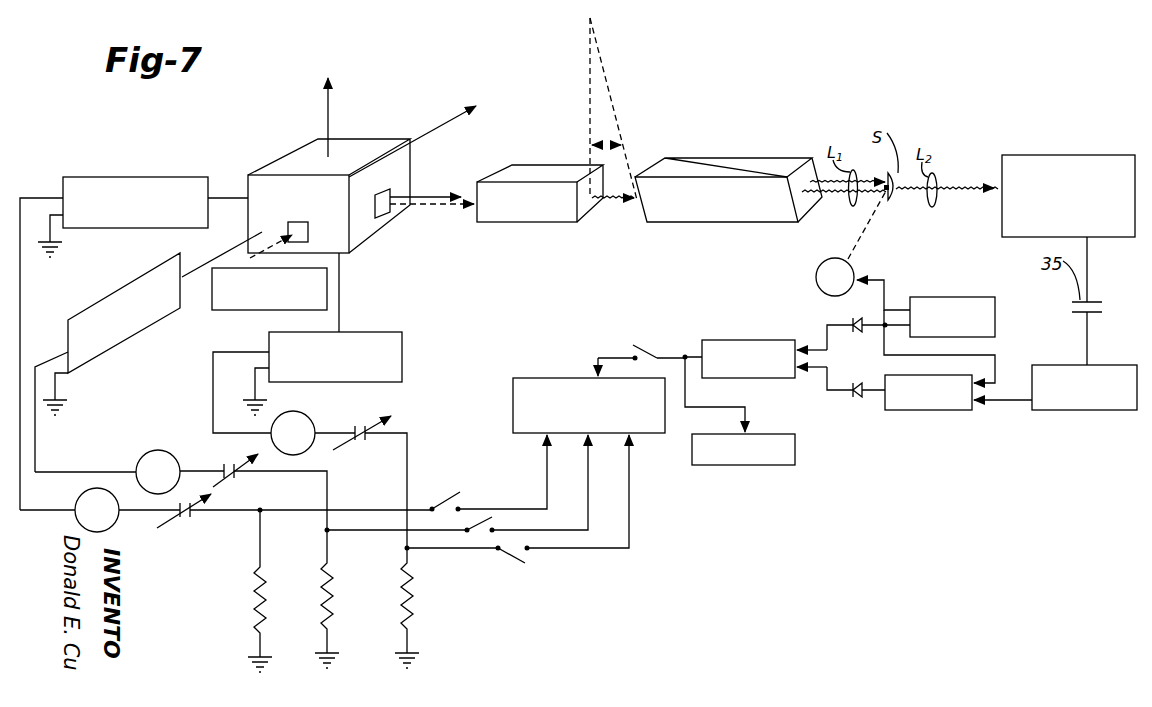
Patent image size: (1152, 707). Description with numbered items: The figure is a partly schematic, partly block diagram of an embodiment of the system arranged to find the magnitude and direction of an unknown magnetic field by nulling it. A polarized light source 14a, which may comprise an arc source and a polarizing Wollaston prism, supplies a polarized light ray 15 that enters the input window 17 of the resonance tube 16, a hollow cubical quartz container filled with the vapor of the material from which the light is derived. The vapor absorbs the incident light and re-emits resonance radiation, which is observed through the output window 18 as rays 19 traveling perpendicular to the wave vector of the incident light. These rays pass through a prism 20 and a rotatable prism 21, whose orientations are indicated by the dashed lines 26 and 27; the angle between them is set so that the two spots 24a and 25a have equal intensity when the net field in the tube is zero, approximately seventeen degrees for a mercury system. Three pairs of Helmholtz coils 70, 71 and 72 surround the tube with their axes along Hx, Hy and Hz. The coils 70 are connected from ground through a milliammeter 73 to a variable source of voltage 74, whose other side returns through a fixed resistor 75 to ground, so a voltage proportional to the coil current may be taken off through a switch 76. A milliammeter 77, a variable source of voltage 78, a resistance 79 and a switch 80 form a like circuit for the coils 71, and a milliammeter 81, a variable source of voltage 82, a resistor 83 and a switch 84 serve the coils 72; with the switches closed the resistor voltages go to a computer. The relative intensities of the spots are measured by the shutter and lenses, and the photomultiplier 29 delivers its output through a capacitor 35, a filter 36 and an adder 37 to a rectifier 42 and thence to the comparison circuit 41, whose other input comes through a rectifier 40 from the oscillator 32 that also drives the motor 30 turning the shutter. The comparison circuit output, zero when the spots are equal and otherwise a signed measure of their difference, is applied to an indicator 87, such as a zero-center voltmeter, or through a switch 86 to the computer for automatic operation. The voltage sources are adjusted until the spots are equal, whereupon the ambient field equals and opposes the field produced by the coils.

The polarized light source 14a is at (222, 312).
The polarized light ray 15 is at (247, 262).
The resonance tube 16 is at (292, 160).
The input window 17 is at (298, 222).
The output window 18 is at (378, 200).
The rays of resonance radiation 19 is at (425, 212).
The prism 20 is at (537, 172).
The rotatable prism 21 is at (687, 163).
The spot 24a is at (802, 190).
The spot 25a is at (810, 182).
The dashed line 26 is at (588, 100).
The dashed line 27 is at (622, 128).
The photomultiplier 29 is at (1033, 155).
The motor 30 is at (817, 273).
The oscillator 32 is at (942, 298).
The capacitor 35 is at (540, 378).
The filter 36 is at (1083, 410).
The adder 37 is at (935, 412).
The rectifier 40 is at (852, 315).
The comparison circuit 41 is at (745, 342).
The rectifier 42 is at (853, 398).
The Helmholtz coils 70 is at (143, 199).
The Helmholtz coils 71 is at (92, 307).
The Helmholtz coils 72 is at (402, 343).
The milliammeter 73 is at (112, 530).
The variable source of voltage 74 is at (192, 522).
The fixed resistor 75 is at (265, 570).
The switch 76 is at (443, 502).
The milliammeter 77 is at (150, 450).
The variable source of voltage 78 is at (220, 462).
The resistance 79 is at (330, 583).
The switch 80 is at (495, 519).
The milliammeter 81 is at (300, 412).
The variable source of voltage 82 is at (352, 425).
The resistor 83 is at (410, 610).
The switch 84 is at (513, 557).
The switch 86 is at (655, 351).
The indicator 87 is at (720, 466).